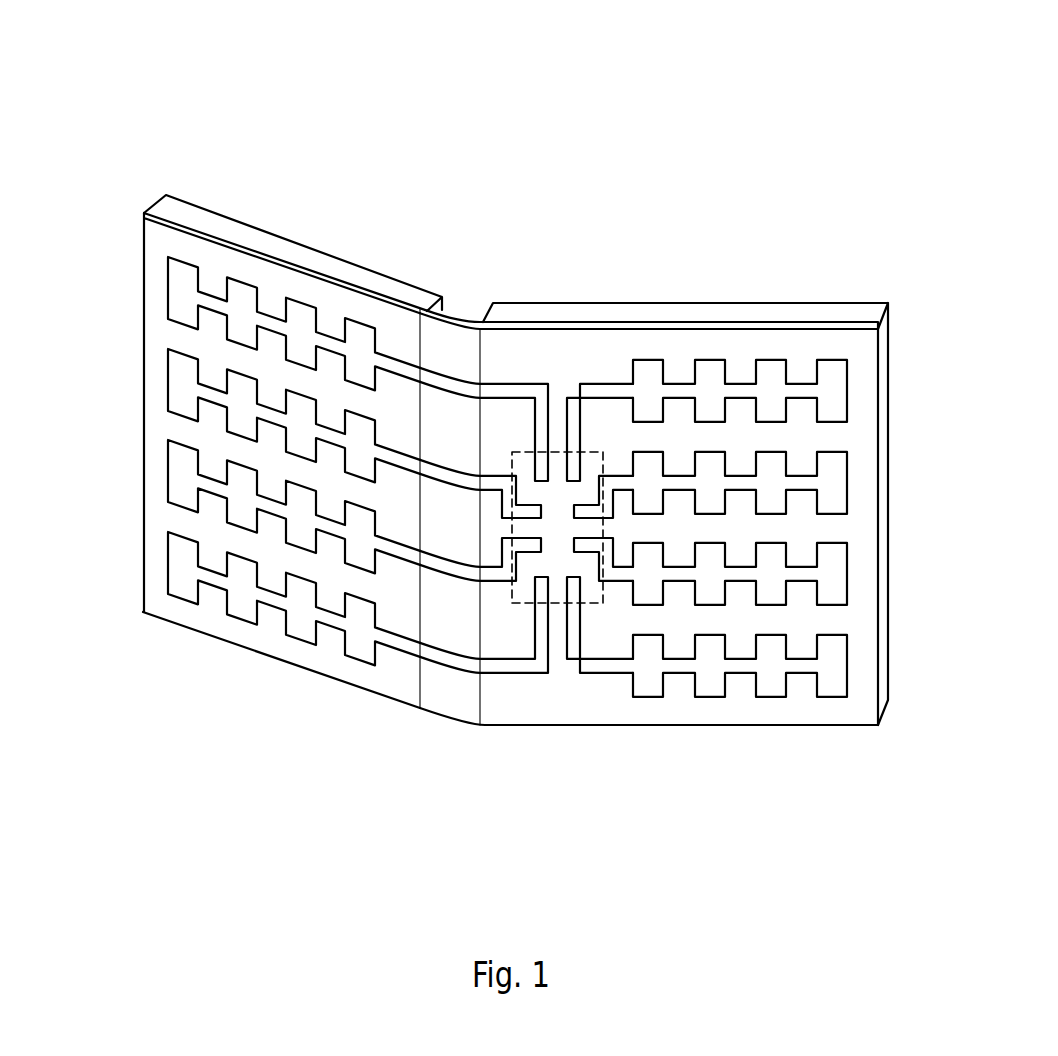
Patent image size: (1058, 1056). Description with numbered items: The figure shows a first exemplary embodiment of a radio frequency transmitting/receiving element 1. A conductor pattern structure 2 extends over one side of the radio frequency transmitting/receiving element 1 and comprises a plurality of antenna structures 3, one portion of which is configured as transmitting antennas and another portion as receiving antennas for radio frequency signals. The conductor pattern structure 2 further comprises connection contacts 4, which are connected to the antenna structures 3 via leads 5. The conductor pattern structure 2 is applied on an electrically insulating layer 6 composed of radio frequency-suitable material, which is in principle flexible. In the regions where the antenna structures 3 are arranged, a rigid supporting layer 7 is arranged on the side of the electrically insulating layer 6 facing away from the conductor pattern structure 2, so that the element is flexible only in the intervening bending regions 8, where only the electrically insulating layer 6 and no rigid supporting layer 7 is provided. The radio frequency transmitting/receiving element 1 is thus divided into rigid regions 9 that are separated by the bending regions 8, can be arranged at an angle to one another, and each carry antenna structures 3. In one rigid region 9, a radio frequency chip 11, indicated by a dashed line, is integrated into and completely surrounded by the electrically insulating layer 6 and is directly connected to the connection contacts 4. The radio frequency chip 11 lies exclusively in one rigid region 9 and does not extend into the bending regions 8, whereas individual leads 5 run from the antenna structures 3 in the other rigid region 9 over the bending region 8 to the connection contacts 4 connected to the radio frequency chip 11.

The radio frequency transmitting/receiving element 1 is at (860, 198).
The conductor pattern structure 2 is at (240, 617).
The antenna structures 3 is at (168, 288).
The connection contacts 4 is at (572, 468).
The leads 5 is at (398, 643).
The electrically insulating layer 6 is at (682, 323).
The rigid supporting layer 7 is at (291, 250).
The bending regions 8 is at (445, 722).
The regions 9 is at (262, 655).
The radio frequency chip 11 is at (603, 603).